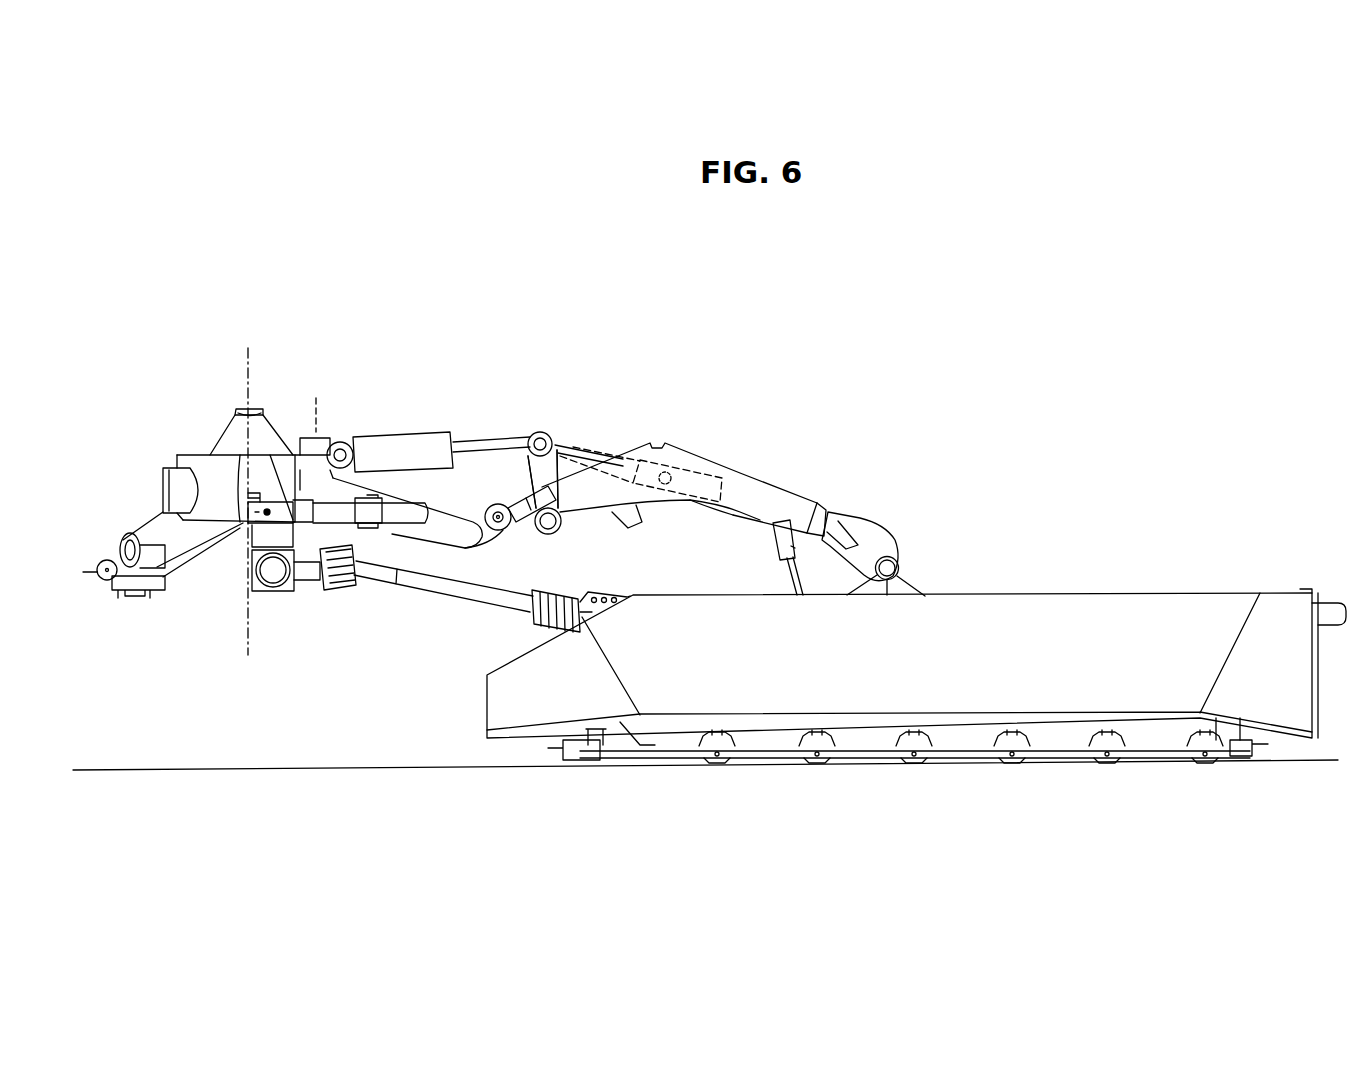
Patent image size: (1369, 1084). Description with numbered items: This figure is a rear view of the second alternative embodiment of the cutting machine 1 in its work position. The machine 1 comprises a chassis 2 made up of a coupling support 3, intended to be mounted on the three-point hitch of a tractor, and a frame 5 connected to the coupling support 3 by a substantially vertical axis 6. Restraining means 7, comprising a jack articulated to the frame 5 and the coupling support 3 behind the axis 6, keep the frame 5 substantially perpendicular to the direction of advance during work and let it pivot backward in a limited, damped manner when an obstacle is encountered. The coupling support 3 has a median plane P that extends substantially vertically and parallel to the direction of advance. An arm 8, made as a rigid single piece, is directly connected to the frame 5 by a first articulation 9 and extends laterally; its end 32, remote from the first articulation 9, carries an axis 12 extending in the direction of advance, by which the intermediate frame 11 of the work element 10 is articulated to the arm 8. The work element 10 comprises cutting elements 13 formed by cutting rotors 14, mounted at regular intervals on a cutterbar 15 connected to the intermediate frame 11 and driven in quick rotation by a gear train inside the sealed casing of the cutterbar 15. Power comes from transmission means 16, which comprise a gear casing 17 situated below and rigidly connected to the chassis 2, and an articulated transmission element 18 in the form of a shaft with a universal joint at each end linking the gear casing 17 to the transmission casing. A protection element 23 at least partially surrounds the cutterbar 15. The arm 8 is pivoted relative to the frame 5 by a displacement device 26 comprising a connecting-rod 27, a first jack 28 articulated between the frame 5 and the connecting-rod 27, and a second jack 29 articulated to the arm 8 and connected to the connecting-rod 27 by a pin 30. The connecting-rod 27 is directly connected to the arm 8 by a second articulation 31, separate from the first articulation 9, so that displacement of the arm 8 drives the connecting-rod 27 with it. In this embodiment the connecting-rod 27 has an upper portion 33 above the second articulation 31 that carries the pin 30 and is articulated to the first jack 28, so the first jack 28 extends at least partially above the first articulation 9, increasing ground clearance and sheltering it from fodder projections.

The cutting machine 1 is at (1082, 348).
The chassis 2 is at (334, 387).
The coupling support 3 is at (278, 442).
The frame 5 is at (465, 530).
The axis 6 is at (318, 440).
The restraining means 7 is at (344, 532).
The arm 8 is at (780, 502).
The first articulation 9 is at (497, 506).
The work element 10 is at (496, 791).
The intermediate frame 11 is at (905, 590).
The axis 12 is at (895, 560).
The cutting elements 13 is at (1255, 760).
The cutting rotors 14 is at (1007, 752).
The cutterbar 15 is at (1068, 752).
The transmission means 16 is at (318, 598).
The gear casing 17 is at (272, 585).
The articulated transmission element 18 is at (443, 590).
The protection element 23 is at (1128, 590).
The displacement device 26 is at (580, 418).
The connecting-rod 27 is at (535, 455).
The first jack 28 is at (440, 447).
The second jack 29 is at (700, 490).
The pin 30 is at (546, 431).
The second articulation 31 is at (562, 522).
The end 32 is at (876, 545).
The upper portion 33 is at (543, 479).
The median plane P is at (248, 625).